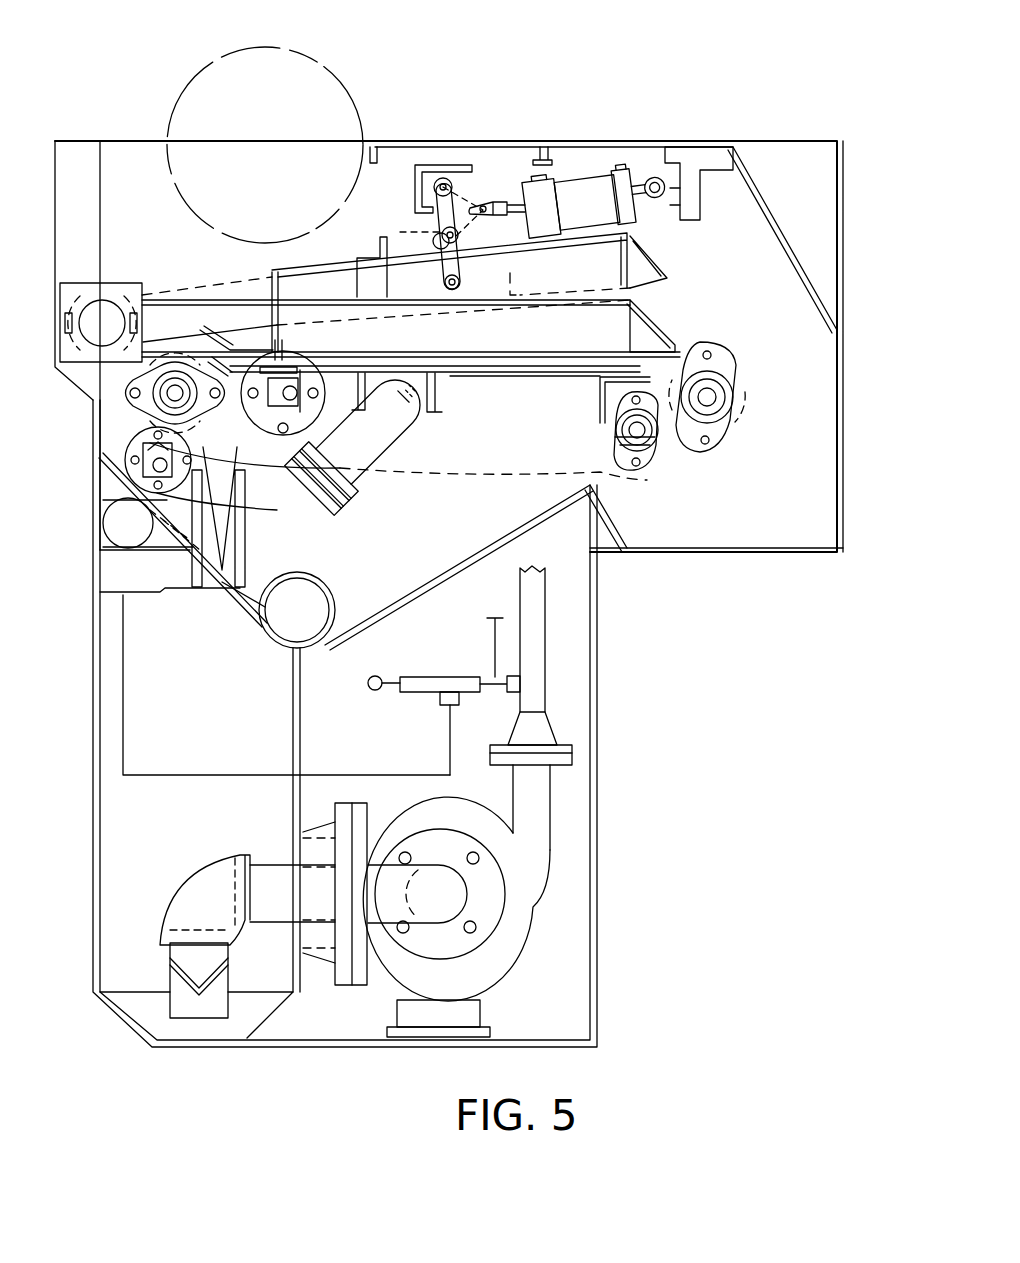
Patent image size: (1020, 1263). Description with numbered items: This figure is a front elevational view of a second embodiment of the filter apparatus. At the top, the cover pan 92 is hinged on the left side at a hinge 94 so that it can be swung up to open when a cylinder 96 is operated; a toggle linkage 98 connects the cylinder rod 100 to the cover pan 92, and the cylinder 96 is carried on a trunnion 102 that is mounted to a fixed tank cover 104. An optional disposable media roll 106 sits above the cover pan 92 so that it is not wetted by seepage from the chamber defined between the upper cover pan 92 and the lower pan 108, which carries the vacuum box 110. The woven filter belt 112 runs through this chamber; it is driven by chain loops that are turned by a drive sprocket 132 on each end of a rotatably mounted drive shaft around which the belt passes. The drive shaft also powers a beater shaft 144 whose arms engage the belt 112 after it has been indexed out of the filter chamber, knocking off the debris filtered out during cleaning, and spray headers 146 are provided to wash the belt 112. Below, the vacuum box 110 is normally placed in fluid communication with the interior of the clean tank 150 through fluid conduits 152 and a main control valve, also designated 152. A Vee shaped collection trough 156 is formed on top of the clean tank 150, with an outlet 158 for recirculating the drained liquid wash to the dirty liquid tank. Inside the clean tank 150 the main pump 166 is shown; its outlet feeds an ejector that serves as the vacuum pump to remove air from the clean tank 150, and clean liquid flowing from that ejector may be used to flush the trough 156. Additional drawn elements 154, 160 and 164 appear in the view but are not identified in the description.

The cover pan 92 is at (318, 297).
The hinge 94 is at (92, 300).
The cylinder 96 is at (583, 185).
The toggle linkage 98 is at (430, 214).
The cylinder rod 100 is at (514, 212).
The trunnion 102 is at (677, 170).
The fixed tank cover 104 is at (593, 141).
The disposable media roll 106 is at (200, 66).
The lower pan 108 is at (512, 363).
The vacuum box 110 is at (437, 400).
The woven filter belt 112 is at (647, 480).
The drive sprocket 132 is at (733, 350).
The beater shaft 144 is at (593, 444).
The spray headers 146 is at (150, 443).
The clean tank 150 is at (90, 783).
The fluid conduits 152 is at (135, 500).
The belt 154 is at (222, 582).
The Vee shaped collection trough 156 is at (458, 560).
The outlet 158 is at (335, 598).
The valve 160 is at (440, 664).
The pipe 164 is at (545, 625).
The main pump 166 is at (512, 982).